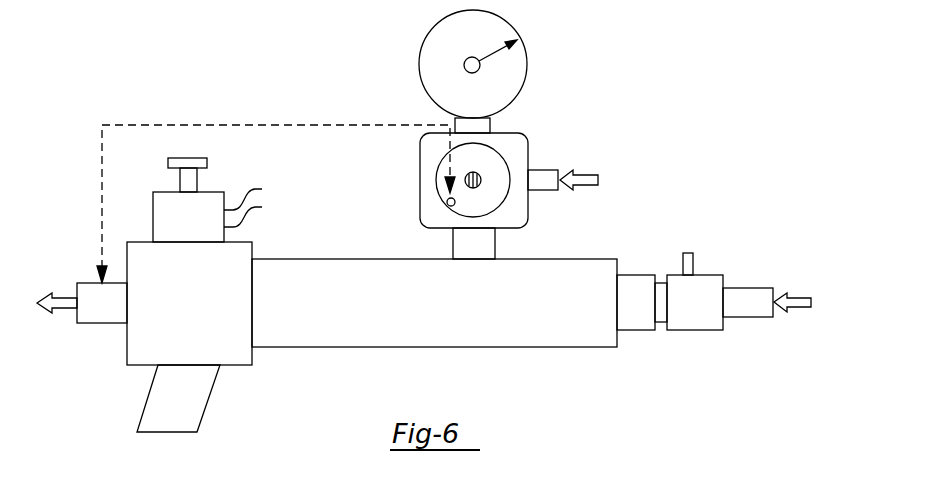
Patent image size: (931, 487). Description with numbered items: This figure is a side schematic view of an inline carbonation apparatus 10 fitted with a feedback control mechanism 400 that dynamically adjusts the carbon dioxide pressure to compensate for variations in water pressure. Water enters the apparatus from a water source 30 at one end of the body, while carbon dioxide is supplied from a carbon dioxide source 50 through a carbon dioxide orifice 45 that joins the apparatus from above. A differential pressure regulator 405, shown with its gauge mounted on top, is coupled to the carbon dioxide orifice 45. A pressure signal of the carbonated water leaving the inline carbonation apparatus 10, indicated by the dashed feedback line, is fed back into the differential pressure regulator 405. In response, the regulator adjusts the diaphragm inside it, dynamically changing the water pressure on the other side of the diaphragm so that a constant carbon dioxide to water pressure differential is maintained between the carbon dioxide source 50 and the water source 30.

The inline carbonation apparatus 10 is at (566, 247).
The water source 30 is at (803, 293).
The carbon dioxide orifice 45 is at (495, 250).
The carbon dioxide source 50 is at (581, 173).
The feedback control mechanism 400 is at (173, 72).
The differential pressure regulator 405 is at (420, 168).